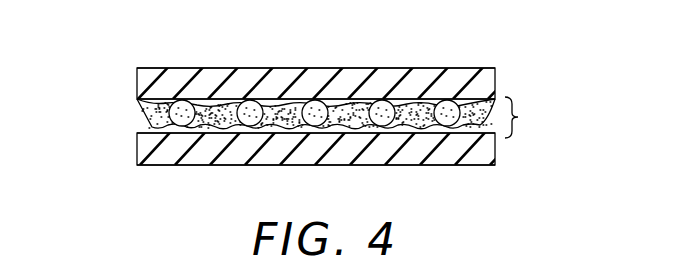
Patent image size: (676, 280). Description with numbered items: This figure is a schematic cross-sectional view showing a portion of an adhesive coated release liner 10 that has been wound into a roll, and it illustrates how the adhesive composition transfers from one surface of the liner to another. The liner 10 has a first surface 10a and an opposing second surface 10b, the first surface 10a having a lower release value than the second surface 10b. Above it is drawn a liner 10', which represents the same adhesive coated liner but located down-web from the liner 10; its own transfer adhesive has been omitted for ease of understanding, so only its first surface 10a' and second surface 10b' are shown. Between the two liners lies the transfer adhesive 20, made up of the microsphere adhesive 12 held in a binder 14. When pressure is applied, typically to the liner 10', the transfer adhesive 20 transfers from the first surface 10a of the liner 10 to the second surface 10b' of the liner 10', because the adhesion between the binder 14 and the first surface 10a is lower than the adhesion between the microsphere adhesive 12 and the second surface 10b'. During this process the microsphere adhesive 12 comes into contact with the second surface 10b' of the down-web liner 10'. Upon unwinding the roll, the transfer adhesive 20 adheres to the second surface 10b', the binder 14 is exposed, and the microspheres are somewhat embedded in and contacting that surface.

The release liner 10 is at (297, 168).
The first surface 10a is at (264, 145).
The second surface 10b is at (312, 202).
The liner 10' is at (294, 63).
The first surface of the down-web liner 10a' is at (312, 35).
The second surface of the down-web liner 10b' is at (272, 109).
The microsphere adhesive 12 is at (443, 100).
The binder 14 is at (430, 133).
The transfer adhesive 20 is at (530, 117).